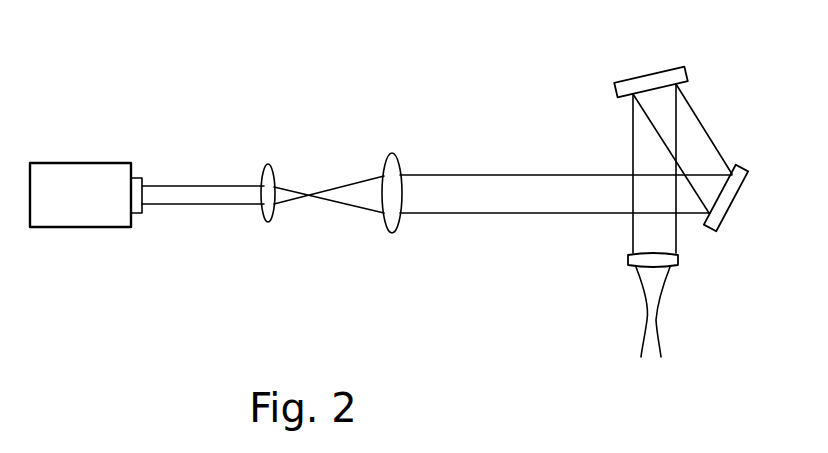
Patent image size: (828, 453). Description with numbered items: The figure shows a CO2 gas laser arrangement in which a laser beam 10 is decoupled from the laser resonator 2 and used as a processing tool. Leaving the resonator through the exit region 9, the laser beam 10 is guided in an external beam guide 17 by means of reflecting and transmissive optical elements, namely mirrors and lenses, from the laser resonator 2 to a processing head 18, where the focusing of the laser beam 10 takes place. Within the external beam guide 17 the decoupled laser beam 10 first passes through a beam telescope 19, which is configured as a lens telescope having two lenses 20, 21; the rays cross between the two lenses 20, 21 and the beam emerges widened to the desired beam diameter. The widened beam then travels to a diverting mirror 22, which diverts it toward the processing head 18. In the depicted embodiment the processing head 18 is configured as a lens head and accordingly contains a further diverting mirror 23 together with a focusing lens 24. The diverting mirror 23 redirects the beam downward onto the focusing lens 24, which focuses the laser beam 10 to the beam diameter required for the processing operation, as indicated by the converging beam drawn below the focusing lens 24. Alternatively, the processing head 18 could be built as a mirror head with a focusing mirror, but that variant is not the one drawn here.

The laser resonator 2 is at (82, 210).
The exit aperture 9 is at (137, 212).
The laser beam 10 is at (203, 196).
The external beam guide 17 is at (488, 297).
The processing head 18 is at (594, 151).
The beam telescope 19 is at (338, 221).
The lens 20 is at (268, 212).
The lens 21 is at (393, 218).
The diverting mirror 22 is at (723, 205).
The diverting mirror 23 is at (652, 82).
The focusing lens 24 is at (630, 262).